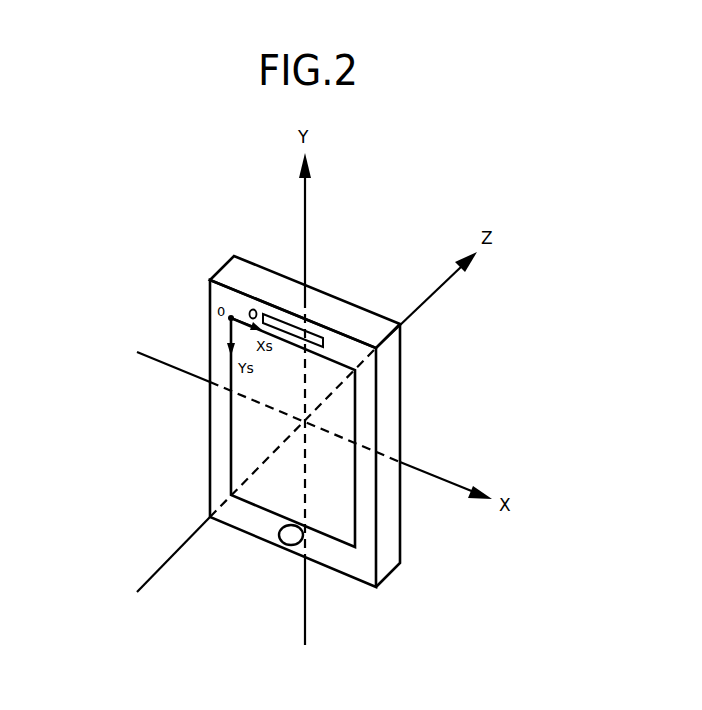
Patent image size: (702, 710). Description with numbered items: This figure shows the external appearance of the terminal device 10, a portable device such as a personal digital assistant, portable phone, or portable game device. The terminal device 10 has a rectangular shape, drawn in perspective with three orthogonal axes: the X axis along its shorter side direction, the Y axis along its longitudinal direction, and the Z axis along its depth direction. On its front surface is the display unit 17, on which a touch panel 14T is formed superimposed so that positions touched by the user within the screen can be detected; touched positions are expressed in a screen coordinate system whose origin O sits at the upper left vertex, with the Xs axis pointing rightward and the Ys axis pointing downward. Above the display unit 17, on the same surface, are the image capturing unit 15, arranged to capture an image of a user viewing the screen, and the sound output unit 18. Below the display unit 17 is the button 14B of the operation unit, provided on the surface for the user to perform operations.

The terminal device 10 is at (392, 572).
The display unit 17 is at (222, 432).
The touch panel 14T is at (230, 448).
The image capturing unit 15 is at (249, 311).
The sound output unit 18 is at (271, 314).
The button 14B is at (283, 544).